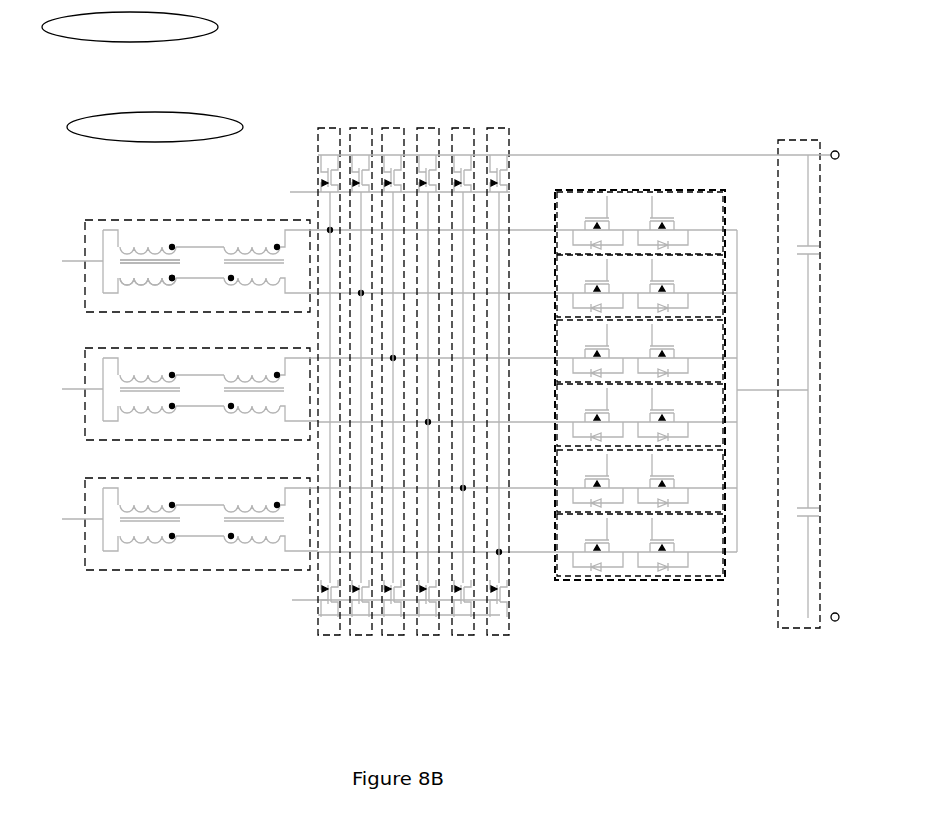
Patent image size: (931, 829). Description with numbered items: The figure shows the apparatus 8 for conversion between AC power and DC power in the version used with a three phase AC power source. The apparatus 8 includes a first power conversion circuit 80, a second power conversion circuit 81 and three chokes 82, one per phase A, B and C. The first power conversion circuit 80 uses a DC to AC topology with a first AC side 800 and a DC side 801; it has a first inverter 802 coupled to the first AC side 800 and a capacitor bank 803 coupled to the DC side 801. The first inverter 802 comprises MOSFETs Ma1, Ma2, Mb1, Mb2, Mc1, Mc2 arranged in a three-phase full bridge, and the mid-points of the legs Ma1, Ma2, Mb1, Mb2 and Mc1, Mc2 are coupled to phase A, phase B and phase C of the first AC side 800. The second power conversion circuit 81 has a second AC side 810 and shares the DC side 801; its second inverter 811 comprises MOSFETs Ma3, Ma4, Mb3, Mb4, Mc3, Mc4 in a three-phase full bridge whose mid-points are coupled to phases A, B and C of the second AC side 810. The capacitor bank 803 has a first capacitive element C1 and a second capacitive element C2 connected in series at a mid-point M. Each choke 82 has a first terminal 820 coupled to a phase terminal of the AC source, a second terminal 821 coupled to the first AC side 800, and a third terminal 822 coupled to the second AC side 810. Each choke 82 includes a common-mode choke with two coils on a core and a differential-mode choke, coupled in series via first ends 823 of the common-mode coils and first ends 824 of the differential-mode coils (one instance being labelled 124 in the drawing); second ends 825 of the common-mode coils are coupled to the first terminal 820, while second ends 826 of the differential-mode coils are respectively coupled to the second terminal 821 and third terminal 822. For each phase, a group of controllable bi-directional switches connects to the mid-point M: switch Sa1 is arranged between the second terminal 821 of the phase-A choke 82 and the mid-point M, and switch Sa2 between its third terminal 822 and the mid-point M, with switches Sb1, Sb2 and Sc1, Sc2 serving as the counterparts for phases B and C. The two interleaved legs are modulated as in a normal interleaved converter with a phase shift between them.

The apparatus 8 is at (681, 420).
The first power conversion circuit 80 is at (117, 44).
The second power conversion circuit 81 is at (140, 142).
The choke 82 is at (100, 306).
The first AC side 800 is at (515, 512).
The DC side 801 is at (833, 151).
The first inverter 802 is at (330, 635).
The capacitor bank 803 is at (574, 381).
The second AC side 810 is at (361, 293).
The second inverter 811 is at (500, 133).
The first terminal 820 is at (83, 263).
The second terminal 821 is at (318, 232).
The third terminal 822 is at (312, 293).
The first ends of the coils of the first common-mode choke 823 is at (186, 293).
The first ends of the coil of the first differential-mode choke 824 is at (222, 356).
The second ends of the coils of the first common-mode choke 825 is at (119, 292).
The second ends of the coils of the first differential-mode choke 826 is at (290, 293).
The common mode inductor second winding (mislabeled 824) 124 is at (222, 228).
The MOSFET Ma1 is at (326, 183).
The MOSFET Ma2 is at (326, 592).
The MOSFET Ma3 is at (392, 183).
The MOSFET Ma4 is at (360, 592).
The MOSFET Mb1 is at (358, 180).
The MOSFET Mb2 is at (392, 592).
The MOSFET Mb3 is at (424, 183).
The MOSFET Mb4 is at (426, 592).
The MOSFET Mc1 is at (461, 183).
The MOSFET Mc2 is at (461, 592).
The MOSFET Mc3 is at (495, 183).
The MOSFET Mc4 is at (497, 592).
The controllable bi-directional switch Sa1 is at (712, 222).
The controllable bi-directional switch Sa2 is at (712, 273).
The controllable bi-directional switch Sb1 is at (716, 354).
The controllable bi-directional switch Sb2 is at (713, 412).
The controllable bi-directional switch Sc1 is at (718, 488).
The controllable bi-directional switch Sc2 is at (713, 540).
The first capacitive element C1 is at (805, 263).
The second capacitive element C2 is at (805, 522).
The mid-point M is at (772, 399).